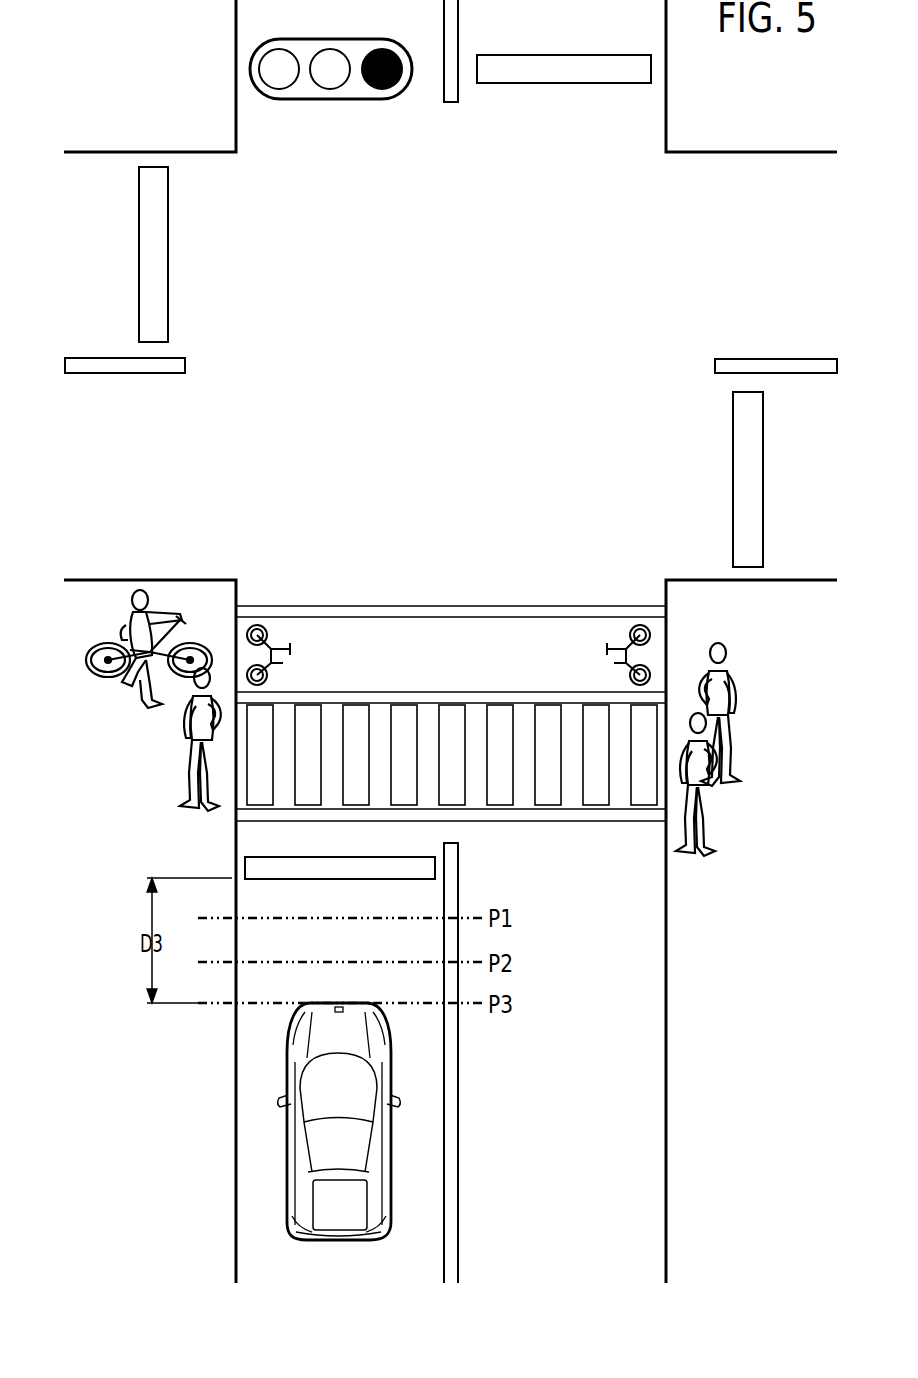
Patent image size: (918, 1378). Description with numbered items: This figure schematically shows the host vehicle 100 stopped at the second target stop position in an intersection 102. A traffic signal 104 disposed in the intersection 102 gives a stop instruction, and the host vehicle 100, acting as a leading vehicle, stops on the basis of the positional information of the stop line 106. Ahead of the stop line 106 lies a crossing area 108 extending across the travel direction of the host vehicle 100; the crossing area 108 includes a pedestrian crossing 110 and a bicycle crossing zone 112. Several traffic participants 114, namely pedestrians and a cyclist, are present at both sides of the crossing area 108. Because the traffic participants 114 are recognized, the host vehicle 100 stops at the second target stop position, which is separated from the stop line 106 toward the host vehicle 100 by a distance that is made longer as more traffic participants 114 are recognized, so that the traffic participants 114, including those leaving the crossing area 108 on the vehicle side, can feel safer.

The host vehicle 100 is at (342, 1223).
The intersection 102 is at (680, 170).
The traffic signal 104 is at (355, 100).
The stop line 106 is at (262, 863).
The crossing area 108 is at (450, 668).
The pedestrian crossing 110 is at (473, 713).
The bicycle crossing zone 112 is at (403, 632).
The traffic participant 114 is at (133, 600).